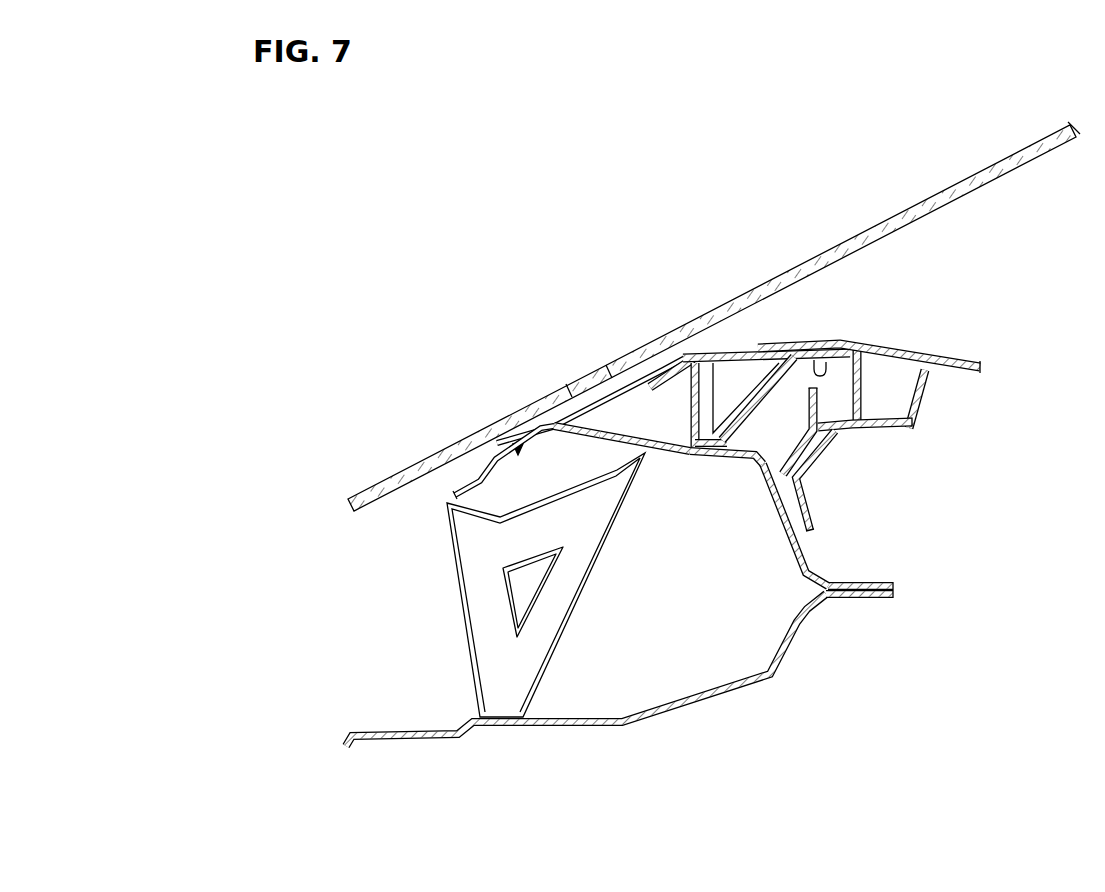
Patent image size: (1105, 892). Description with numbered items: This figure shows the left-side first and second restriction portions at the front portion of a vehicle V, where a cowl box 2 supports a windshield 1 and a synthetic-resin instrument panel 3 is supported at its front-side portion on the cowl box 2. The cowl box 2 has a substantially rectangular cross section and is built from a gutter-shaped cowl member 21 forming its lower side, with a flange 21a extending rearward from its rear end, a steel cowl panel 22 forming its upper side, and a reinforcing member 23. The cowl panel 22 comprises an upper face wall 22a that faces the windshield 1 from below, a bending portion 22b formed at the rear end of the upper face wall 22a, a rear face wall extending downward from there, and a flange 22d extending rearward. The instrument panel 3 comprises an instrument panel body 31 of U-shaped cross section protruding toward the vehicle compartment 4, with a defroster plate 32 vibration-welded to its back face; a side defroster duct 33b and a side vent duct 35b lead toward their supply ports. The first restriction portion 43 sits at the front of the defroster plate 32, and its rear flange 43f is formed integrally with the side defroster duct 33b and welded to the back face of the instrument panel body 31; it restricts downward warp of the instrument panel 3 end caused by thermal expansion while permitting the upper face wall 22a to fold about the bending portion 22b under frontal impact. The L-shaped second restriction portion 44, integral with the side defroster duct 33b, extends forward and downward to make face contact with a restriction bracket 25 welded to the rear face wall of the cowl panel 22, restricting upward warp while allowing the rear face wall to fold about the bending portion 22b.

The windshield 1 is at (994, 162).
The cowl box 2 is at (623, 582).
The instrument panel 3 is at (894, 377).
The vehicle compartment 4 is at (1066, 367).
The cowl member 21 is at (655, 718).
The flange 21a is at (853, 600).
The cowl panel 22 is at (548, 414).
The upper face wall 22a is at (657, 457).
The bending portion 22b is at (757, 467).
The flange 22d is at (860, 580).
The reinforcing member 23 is at (490, 655).
The restriction bracket 25 is at (793, 548).
The instrument panel body 31 is at (905, 347).
The defroster plate 32 is at (839, 365).
The side defroster duct 33b is at (923, 400).
The side vent duct 35b is at (882, 428).
The first restriction portion 43 is at (729, 388).
The rear flange 43f is at (823, 357).
The second restriction portion 44 is at (827, 462).
The vehicle V is at (505, 152).